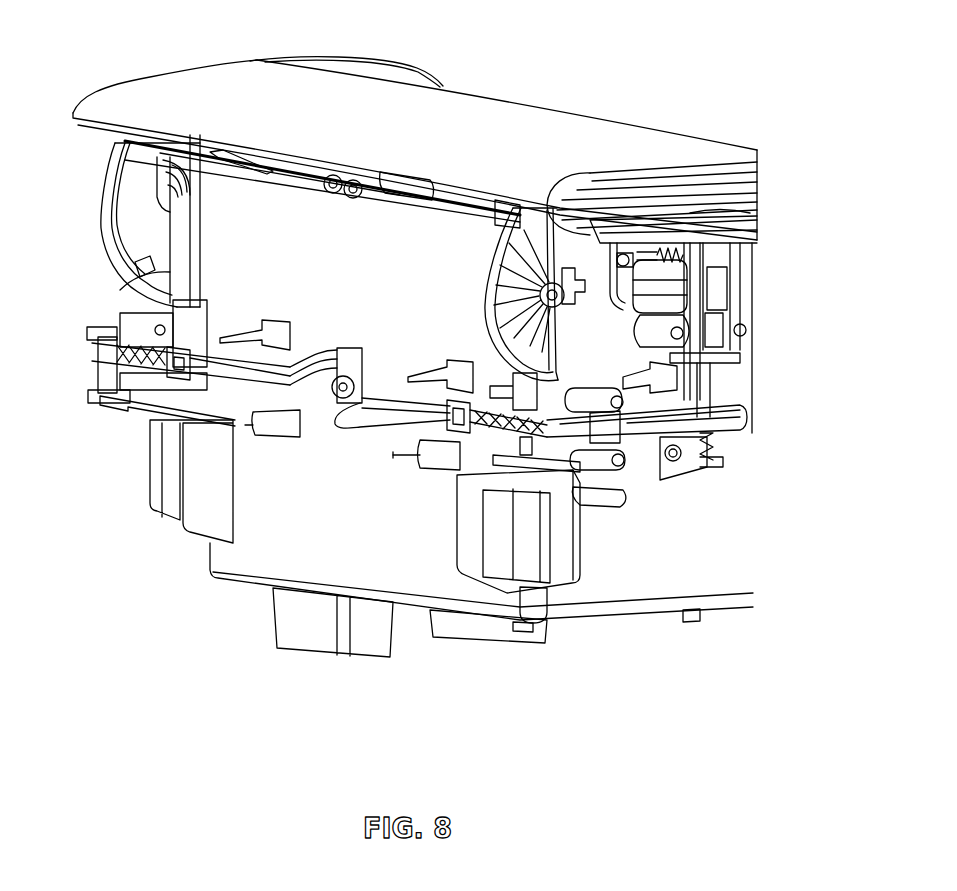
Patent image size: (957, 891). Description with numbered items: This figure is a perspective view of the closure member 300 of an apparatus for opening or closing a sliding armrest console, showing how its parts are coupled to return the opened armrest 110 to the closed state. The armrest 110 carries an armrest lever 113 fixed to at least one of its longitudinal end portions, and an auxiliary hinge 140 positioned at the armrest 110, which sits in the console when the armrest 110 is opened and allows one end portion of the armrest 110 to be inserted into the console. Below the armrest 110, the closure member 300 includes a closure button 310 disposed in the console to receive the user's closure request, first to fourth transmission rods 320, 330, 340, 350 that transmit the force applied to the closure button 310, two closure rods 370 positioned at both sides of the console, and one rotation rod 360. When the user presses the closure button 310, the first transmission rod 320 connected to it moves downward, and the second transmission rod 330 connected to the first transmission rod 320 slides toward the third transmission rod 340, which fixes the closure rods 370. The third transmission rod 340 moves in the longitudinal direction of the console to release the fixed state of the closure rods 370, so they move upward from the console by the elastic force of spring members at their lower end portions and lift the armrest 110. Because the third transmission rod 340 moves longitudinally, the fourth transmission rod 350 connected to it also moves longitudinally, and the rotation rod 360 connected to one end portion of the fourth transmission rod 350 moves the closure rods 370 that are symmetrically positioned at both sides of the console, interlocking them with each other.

The armrest 110 is at (207, 78).
The armrest lever 113 is at (503, 247).
The auxiliary hinge 140 is at (560, 288).
The closure member 300 is at (444, 489).
The closure button 310 is at (717, 210).
The first transmission rod 320 is at (708, 373).
The second transmission rod 330 is at (670, 423).
The third transmission rod 340 is at (550, 433).
The fourth transmission rod 350 is at (400, 417).
The rotation rod 360 is at (337, 402).
The closure rods 370 is at (523, 407).